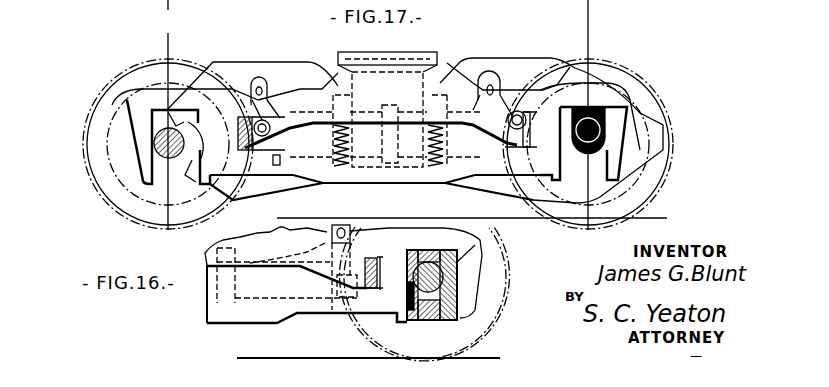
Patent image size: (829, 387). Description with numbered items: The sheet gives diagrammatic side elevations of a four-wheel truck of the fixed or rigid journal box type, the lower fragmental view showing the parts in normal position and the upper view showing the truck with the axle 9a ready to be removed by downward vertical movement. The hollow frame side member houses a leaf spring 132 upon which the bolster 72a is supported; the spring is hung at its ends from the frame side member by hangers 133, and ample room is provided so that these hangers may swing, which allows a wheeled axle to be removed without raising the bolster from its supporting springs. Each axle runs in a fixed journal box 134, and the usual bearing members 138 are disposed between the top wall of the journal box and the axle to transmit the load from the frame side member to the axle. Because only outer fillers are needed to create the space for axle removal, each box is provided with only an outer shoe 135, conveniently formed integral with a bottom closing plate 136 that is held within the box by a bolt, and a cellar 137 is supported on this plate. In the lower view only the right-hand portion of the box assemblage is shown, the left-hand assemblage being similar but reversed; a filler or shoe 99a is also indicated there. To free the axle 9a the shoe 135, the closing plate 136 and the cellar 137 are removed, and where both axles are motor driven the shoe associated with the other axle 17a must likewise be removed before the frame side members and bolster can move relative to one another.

In FIG. 17, the axle 9a is at (157, 133).
In FIG. 17, the fixed journal box 134 is at (150, 153).
In FIG. 17, the bolster 72a is at (430, 63).
In FIG. 17, the hangers 133 is at (493, 83).
In FIG. 17, the leaf spring 132 is at (463, 187).
In FIG. 17, the axle 17a is at (603, 138).
In FIG. 16, the filler or shoe 99a is at (383, 255).
In FIG. 16, the bearing members 138 is at (457, 268).
In FIG. 16, the outer shoe 135 is at (457, 297).
In FIG. 16, the bottom closing plate 136 is at (428, 320).
In FIG. 16, the cellar 137 is at (378, 317).